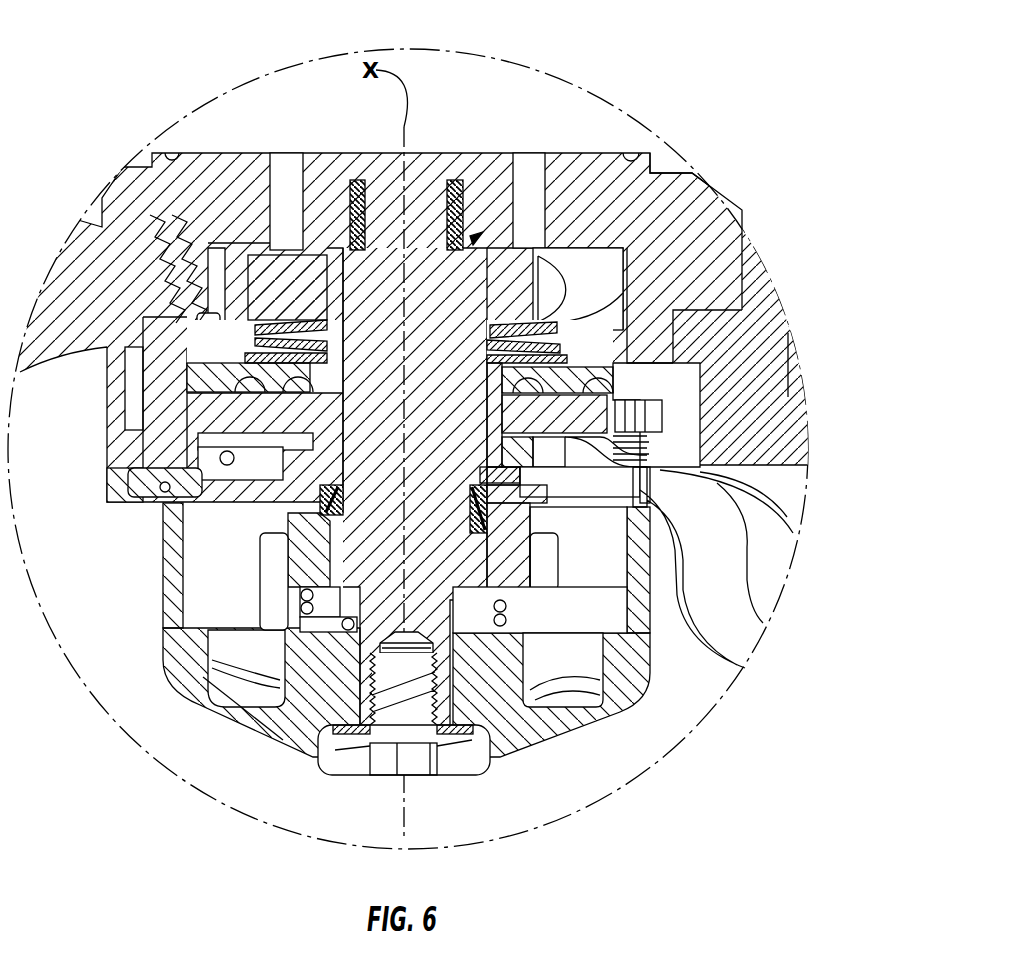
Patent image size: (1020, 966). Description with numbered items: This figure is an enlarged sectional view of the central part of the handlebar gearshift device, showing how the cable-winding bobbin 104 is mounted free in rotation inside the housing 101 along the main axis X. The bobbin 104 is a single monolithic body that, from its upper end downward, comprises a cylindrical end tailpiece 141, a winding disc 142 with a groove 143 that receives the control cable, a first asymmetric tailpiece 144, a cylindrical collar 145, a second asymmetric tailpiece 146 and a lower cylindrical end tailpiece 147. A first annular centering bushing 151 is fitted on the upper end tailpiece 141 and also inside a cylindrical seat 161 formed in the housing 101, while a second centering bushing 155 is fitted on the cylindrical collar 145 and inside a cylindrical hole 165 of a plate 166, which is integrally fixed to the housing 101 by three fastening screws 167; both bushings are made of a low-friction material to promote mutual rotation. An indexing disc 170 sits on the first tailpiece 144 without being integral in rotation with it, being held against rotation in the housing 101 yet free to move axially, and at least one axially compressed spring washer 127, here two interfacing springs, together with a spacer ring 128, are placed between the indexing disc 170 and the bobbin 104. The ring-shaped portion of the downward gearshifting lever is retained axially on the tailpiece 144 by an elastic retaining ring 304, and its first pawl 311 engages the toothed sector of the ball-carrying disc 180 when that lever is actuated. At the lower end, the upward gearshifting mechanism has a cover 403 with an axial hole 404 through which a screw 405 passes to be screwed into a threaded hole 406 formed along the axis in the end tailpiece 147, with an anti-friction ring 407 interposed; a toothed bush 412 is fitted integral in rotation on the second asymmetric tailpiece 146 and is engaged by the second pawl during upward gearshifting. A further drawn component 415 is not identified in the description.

The housing 101 is at (580, 152).
The cable-winding bobbin 104 is at (517, 270).
The spring washer 127 is at (640, 330).
The spacer ring 128 is at (623, 377).
The cylindrical end tailpiece 141 is at (413, 197).
The winding disc 142 is at (547, 255).
The groove 143 is at (690, 180).
The first asymmetric tailpiece 144 is at (340, 250).
The cylindrical collar 145 is at (285, 615).
The second asymmetric tailpiece 146 is at (467, 558).
The cylindrical end tailpiece 147 is at (360, 645).
The first annular centering bushing 151 is at (477, 240).
The second centering bushing 155 is at (325, 522).
The cylindrical seat 161 is at (370, 200).
The cylindrical hole 165 is at (300, 545).
The plate 166 is at (113, 482).
The fastening screws 167 is at (148, 485).
The indexing disc 170 is at (620, 337).
The ball-carrying disc 180 is at (557, 393).
The elastic retaining ring 304 is at (313, 477).
The first pawl 311 is at (658, 412).
The cover 403 is at (250, 717).
The axial hole 404 is at (333, 748).
The screw 405 is at (450, 760).
The threaded hole 406 is at (365, 643).
The anti-friction ring 407 is at (467, 733).
The toothed bush 412 is at (513, 530).
The ball bearing 415 is at (508, 605).